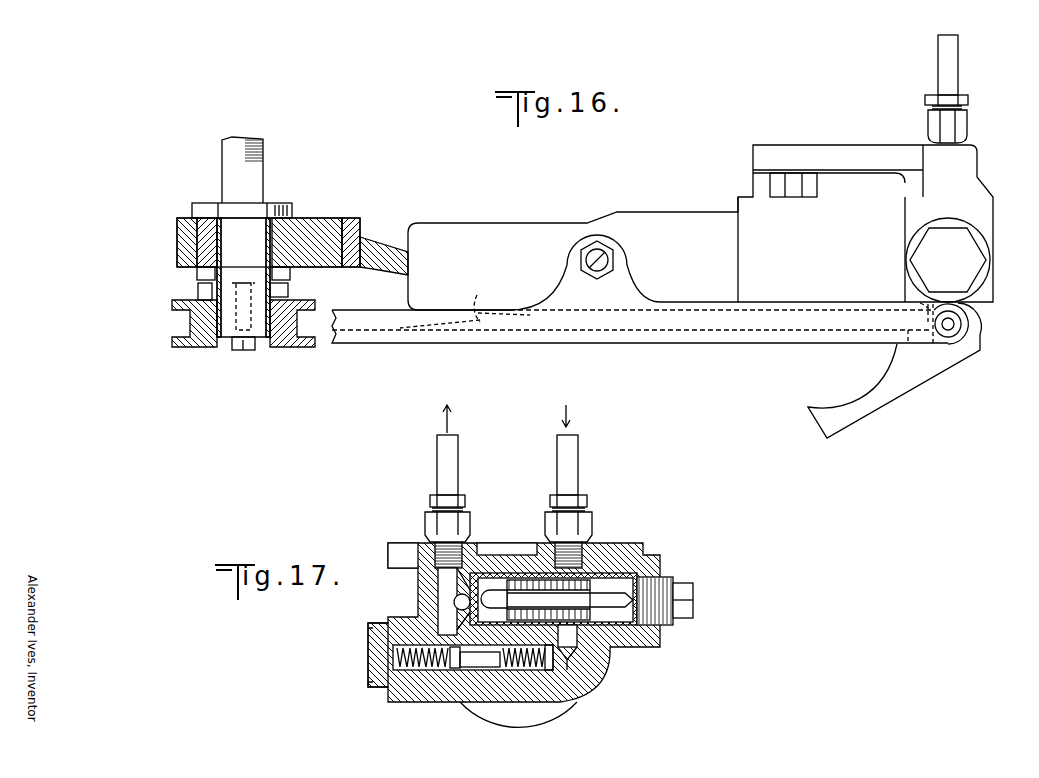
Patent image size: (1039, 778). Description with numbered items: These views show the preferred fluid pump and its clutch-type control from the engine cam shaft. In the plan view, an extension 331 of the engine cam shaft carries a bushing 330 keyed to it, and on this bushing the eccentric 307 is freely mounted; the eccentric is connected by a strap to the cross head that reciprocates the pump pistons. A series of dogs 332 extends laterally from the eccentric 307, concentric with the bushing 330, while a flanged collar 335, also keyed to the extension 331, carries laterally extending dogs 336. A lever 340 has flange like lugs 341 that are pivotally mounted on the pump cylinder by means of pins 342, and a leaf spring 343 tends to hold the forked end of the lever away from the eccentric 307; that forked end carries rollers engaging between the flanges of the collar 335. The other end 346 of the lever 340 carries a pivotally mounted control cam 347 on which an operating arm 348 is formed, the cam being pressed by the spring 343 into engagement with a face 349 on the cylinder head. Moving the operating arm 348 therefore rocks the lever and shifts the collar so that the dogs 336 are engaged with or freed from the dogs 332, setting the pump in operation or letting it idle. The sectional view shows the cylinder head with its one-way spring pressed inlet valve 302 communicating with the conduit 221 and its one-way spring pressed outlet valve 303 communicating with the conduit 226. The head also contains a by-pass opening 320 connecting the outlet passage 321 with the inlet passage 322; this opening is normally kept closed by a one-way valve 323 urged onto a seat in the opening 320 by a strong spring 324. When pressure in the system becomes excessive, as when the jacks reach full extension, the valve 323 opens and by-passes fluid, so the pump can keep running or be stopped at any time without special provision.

In FIG. 16, the extension of the engine cam shaft 331 is at (233, 173).
In FIG. 16, the eccentric 307 is at (307, 227).
In FIG. 16, the dogs 332 is at (207, 275).
In FIG. 16, the bushing 330 is at (215, 275).
In FIG. 16, the dogs 336 is at (205, 292).
In FIG. 16, the flanged collar 335 is at (243, 333).
In FIG. 16, the flange like lugs 341 is at (617, 291).
In FIG. 16, the pins 342 is at (603, 258).
In FIG. 16, the leaf spring 343 is at (465, 308).
In FIG. 16, the lever 340 is at (630, 335).
In FIG. 16, the other end of the lever 346 is at (887, 335).
In FIG. 16, the face on the cylinder head 349 is at (972, 300).
In FIG. 16, the control cam 347 is at (977, 327).
In FIG. 16, the operating arm 348 is at (915, 378).
In FIG. 17, the conduit 226 is at (452, 462).
In FIG. 17, the conduit 221 is at (568, 470).
In FIG. 17, the inlet passage 322 is at (572, 668).
In FIG. 17, the by-pass opening 320 is at (463, 543).
In FIG. 17, the outlet passage 321 is at (443, 583).
In FIG. 17, the one-way valve 323 is at (487, 575).
In FIG. 17, the strong spring 324 is at (593, 550).
In FIG. 17, the inlet valve 302 is at (547, 660).
In FIG. 17, the outlet valve 303 is at (473, 657).